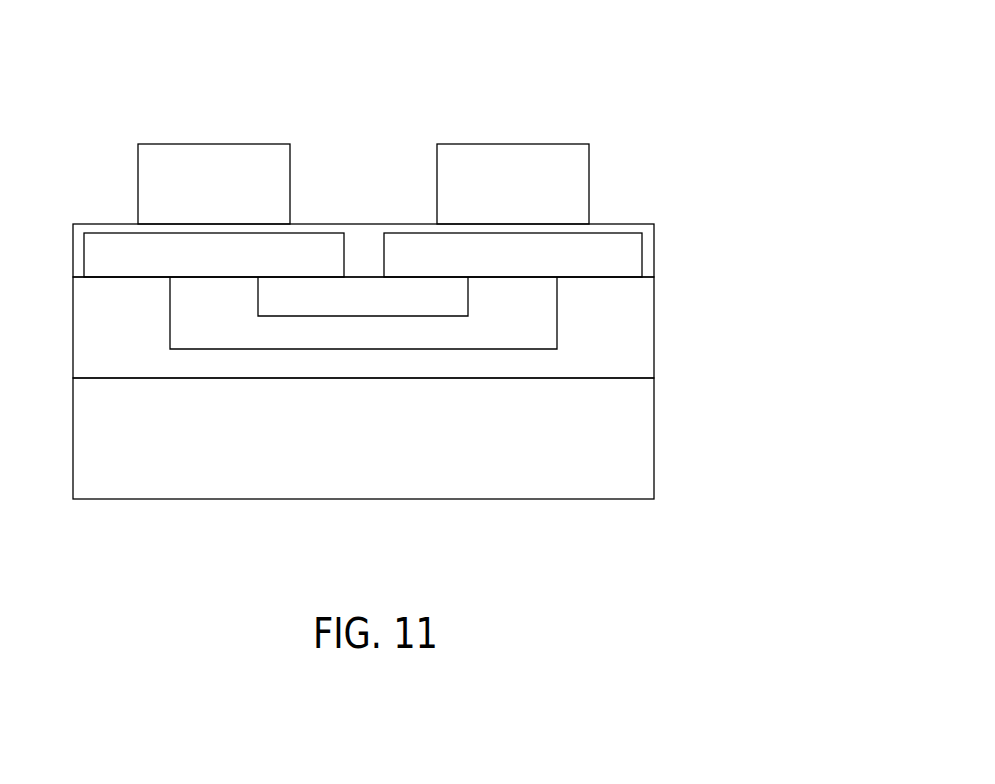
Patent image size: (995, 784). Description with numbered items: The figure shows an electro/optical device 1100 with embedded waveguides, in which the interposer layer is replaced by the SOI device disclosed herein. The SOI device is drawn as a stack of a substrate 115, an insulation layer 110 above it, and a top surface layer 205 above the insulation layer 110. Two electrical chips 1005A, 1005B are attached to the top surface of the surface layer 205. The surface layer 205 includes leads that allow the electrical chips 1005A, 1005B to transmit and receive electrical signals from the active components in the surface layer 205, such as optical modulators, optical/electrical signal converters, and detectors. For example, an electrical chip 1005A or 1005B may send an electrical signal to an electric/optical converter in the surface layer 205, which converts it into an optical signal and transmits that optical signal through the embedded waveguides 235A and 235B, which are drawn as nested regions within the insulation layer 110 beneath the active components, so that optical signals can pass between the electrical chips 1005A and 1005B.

The electro/optical device 1100 is at (708, 122).
The electrical chip 1005A is at (225, 143).
The electrical chip 1005B is at (520, 143).
The surface layer 205 is at (654, 242).
The insulation layer 110 is at (655, 332).
The substrate 115 is at (655, 443).
The embedded waveguide 235A is at (437, 316).
The embedded waveguide 235B is at (557, 330).